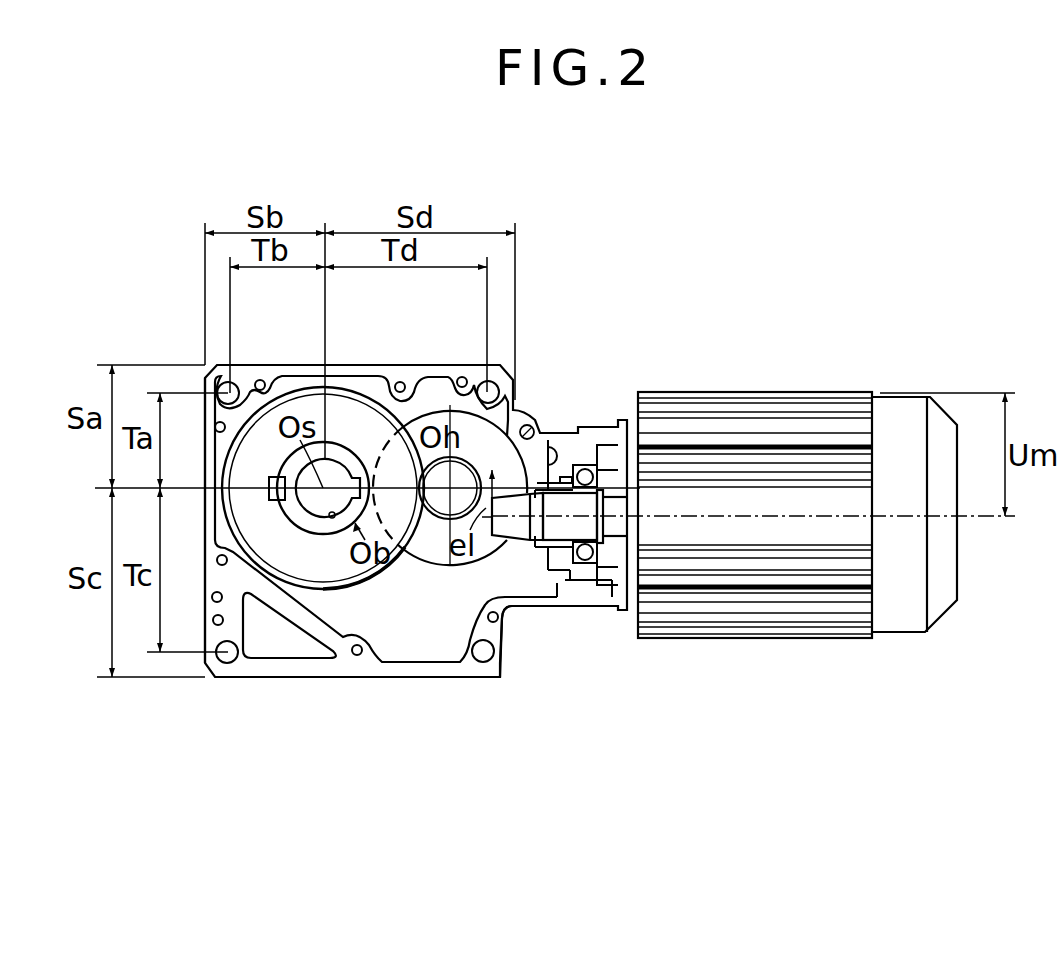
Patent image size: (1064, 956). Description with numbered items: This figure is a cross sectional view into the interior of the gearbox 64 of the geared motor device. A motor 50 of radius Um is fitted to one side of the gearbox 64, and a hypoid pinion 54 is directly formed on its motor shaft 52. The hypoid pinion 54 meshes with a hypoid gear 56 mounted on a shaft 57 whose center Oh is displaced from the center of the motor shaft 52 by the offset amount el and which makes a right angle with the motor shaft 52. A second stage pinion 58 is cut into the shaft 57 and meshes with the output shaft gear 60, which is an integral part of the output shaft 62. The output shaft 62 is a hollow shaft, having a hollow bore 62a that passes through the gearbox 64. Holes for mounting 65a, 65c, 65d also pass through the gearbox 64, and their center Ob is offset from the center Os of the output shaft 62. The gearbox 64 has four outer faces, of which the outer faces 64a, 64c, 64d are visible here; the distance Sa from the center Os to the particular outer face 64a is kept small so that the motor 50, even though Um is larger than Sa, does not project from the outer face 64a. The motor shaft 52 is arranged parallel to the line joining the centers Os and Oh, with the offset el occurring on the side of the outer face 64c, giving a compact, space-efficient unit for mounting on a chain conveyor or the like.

The motor 50 is at (778, 405).
The motor shaft 52 is at (565, 575).
The hypoid pinion 54 is at (493, 540).
The hypoid gear 56 is at (500, 452).
The shaft 57 is at (450, 457).
The second stage pinion 58 is at (533, 425).
The output shaft gear 60 is at (338, 518).
The output shaft 62 is at (317, 530).
The hollow bore 62a is at (343, 590).
The gearbox 64 is at (418, 683).
The outer face 64a is at (346, 362).
The outer face 64c is at (198, 430).
The outer face 64d is at (520, 652).
The hole for mounting 65a is at (236, 387).
The hole for mounting 65c is at (224, 664).
The hole for mounting 65d is at (498, 399).